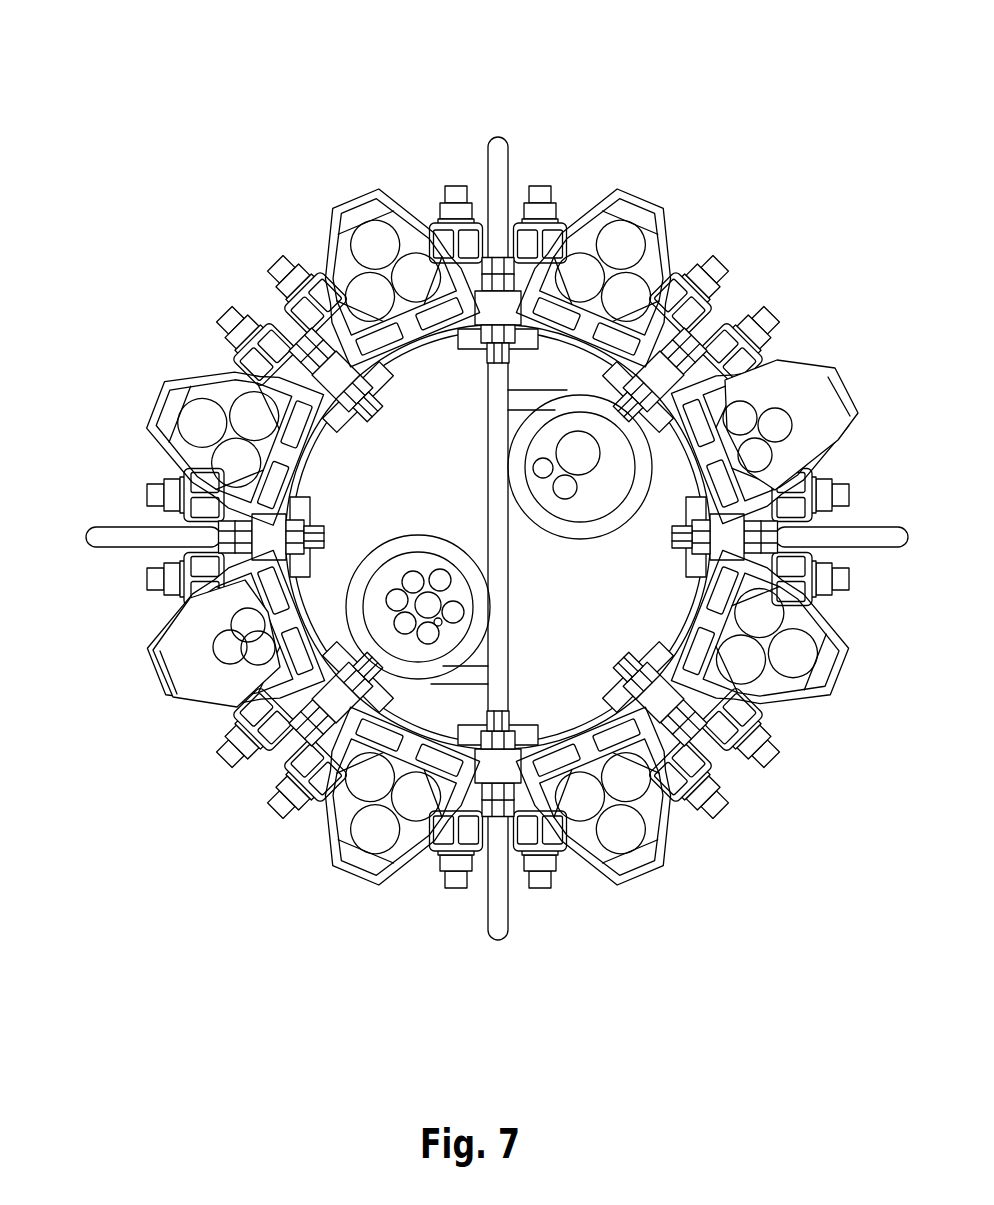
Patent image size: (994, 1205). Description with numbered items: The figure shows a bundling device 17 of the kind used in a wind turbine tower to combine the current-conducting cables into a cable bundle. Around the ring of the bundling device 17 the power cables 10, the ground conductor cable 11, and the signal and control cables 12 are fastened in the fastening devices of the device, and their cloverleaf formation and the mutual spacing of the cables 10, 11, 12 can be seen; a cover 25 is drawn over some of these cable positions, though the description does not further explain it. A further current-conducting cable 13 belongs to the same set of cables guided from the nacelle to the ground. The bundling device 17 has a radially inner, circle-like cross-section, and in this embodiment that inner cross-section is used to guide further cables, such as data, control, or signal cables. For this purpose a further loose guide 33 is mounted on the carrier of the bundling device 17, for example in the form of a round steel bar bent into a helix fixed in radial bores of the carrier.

The bundling device 17 is at (380, 108).
The power cable 10 is at (362, 246).
The ground conductor cable 11 is at (625, 245).
The cover 25 is at (800, 380).
The signal and control cable 12 is at (775, 426).
The current-conducting cable 13 is at (540, 470).
The loose guide 33 is at (480, 653).